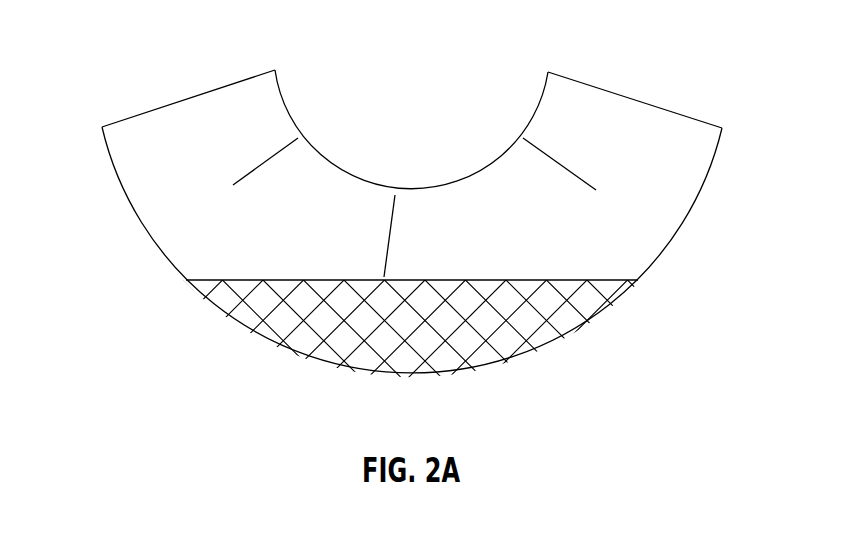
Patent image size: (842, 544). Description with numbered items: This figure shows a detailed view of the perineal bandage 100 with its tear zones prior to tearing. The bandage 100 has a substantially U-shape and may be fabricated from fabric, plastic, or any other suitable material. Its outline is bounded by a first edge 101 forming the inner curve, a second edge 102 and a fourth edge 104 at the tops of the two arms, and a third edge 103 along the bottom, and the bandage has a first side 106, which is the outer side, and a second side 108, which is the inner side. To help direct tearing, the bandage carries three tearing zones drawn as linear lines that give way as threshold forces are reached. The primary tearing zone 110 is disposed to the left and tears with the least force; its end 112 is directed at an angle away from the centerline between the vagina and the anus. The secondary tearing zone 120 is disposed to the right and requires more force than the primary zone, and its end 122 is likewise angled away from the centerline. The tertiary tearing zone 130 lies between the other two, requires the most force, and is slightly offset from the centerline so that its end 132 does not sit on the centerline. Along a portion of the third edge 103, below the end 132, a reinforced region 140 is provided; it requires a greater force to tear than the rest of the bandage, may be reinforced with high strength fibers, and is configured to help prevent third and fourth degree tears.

The perineal bandage 100 is at (169, 42).
The first edge 101 is at (467, 183).
The second edge 102 is at (636, 99).
The third edge 103 is at (573, 332).
The fourth edge 104 is at (152, 110).
The first side 106 is at (655, 238).
The second side 108 is at (680, 170).
The primary tearing zone 110 is at (280, 152).
The end of tearing zone 110 112 is at (233, 185).
The secondary tearing zone 120 is at (558, 162).
The end of tearing zone 120 122 is at (594, 189).
The tertiary tearing zone 130 is at (391, 222).
The end of tertiary zone 130 132 is at (383, 263).
The reinforced region 140 is at (300, 345).